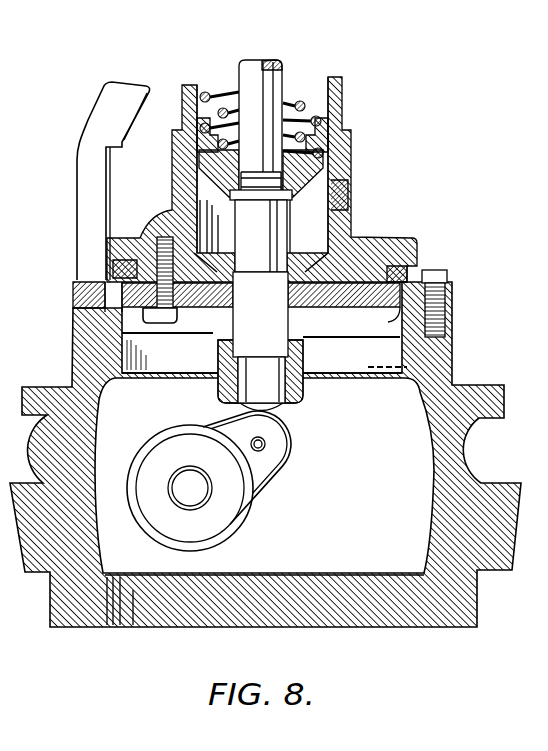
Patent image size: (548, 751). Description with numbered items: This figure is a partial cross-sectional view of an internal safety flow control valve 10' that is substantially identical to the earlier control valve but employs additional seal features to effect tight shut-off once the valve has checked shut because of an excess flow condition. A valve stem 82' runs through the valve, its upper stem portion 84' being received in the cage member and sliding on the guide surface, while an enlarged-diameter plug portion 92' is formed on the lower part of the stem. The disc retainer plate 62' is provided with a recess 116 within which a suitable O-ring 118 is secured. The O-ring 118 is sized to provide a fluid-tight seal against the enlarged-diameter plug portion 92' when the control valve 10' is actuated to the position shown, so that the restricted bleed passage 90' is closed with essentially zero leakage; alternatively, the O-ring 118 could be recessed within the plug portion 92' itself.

The internal control valve 10' is at (265, 328).
The disc retainer plate 62' is at (265, 454).
The valve stem 82' is at (262, 156).
The upper stem portion 84' is at (233, 121).
The restricted bleed passage 90' is at (263, 256).
The enlarged-diameter plug portion 92' is at (260, 341).
The recess 116 is at (205, 313).
The O-ring 118 is at (318, 310).